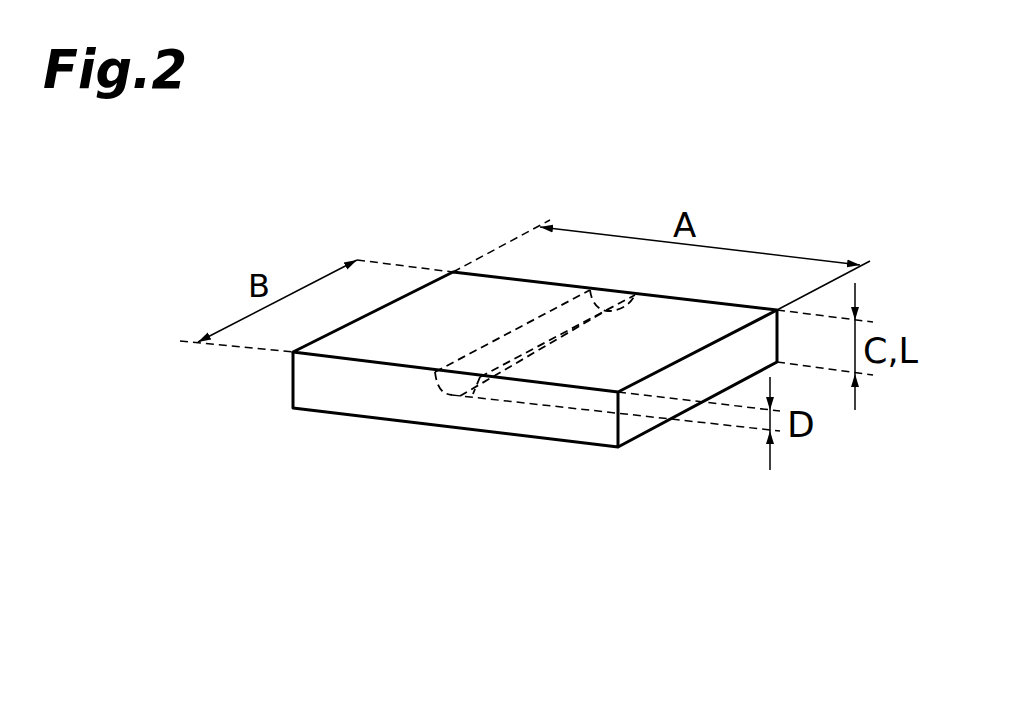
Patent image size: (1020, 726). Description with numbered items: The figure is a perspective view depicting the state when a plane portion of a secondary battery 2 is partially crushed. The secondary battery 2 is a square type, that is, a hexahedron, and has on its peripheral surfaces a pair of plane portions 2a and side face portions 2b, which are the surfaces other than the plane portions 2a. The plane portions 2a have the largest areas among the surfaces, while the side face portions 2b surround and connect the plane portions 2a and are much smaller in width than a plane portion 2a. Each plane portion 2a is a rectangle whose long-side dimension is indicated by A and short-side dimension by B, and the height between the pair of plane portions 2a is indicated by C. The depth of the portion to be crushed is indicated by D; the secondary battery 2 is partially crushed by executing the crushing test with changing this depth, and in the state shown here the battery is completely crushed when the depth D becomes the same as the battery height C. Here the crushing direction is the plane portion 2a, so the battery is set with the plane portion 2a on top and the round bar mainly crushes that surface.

The secondary battery 2 is at (500, 420).
The plane portion 2a is at (393, 348).
The side face portion 2b is at (380, 398).